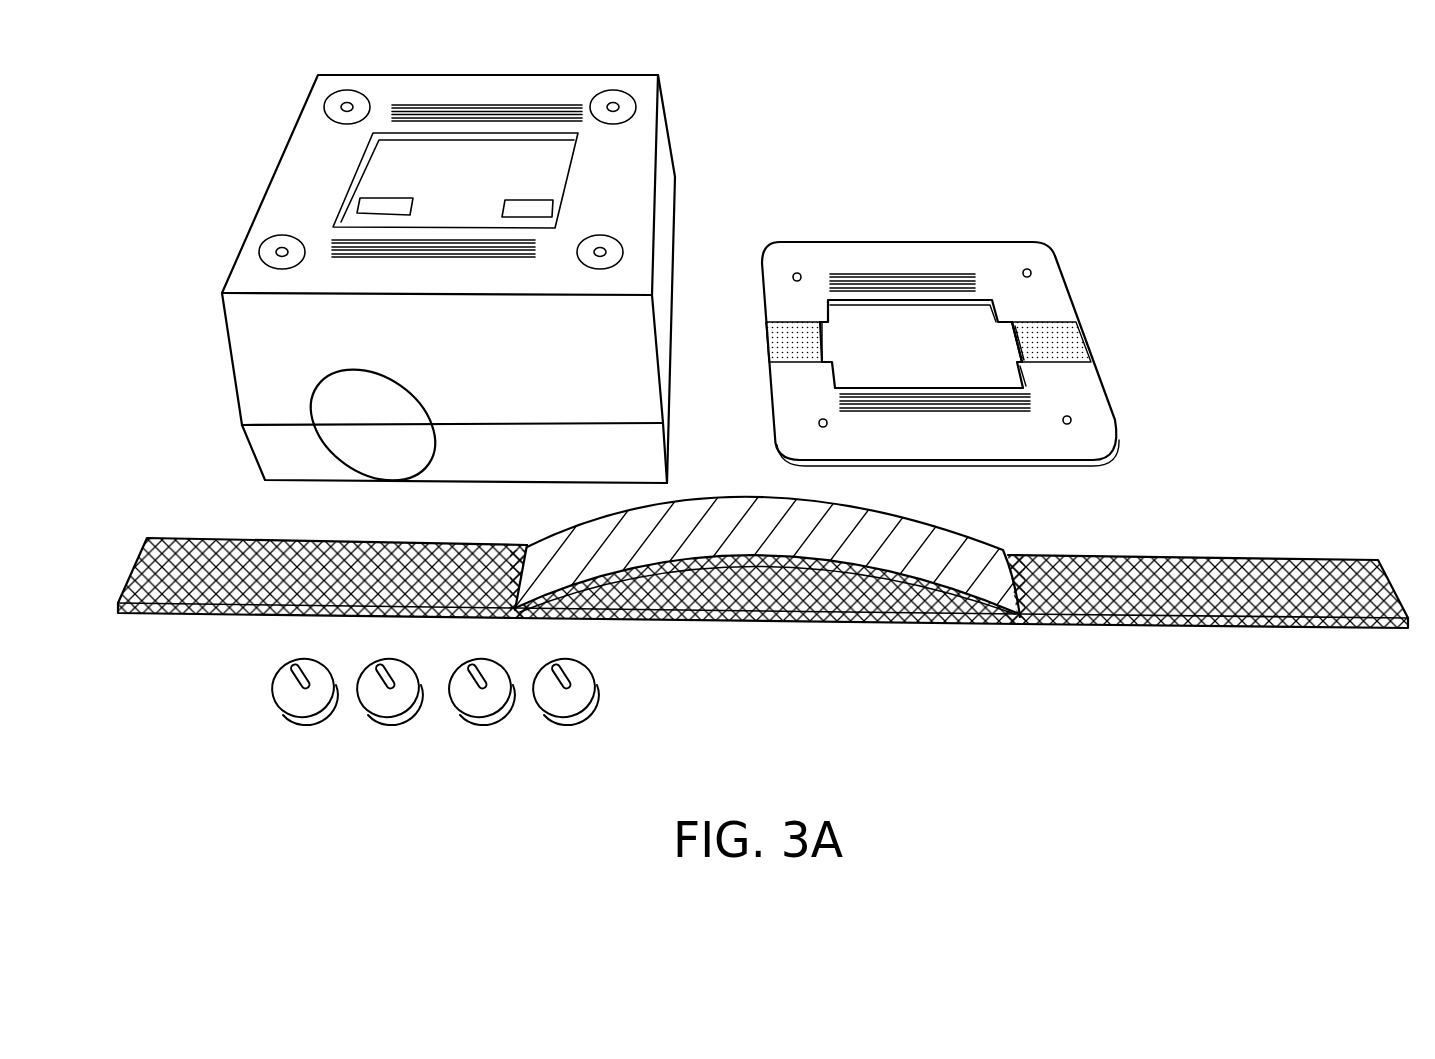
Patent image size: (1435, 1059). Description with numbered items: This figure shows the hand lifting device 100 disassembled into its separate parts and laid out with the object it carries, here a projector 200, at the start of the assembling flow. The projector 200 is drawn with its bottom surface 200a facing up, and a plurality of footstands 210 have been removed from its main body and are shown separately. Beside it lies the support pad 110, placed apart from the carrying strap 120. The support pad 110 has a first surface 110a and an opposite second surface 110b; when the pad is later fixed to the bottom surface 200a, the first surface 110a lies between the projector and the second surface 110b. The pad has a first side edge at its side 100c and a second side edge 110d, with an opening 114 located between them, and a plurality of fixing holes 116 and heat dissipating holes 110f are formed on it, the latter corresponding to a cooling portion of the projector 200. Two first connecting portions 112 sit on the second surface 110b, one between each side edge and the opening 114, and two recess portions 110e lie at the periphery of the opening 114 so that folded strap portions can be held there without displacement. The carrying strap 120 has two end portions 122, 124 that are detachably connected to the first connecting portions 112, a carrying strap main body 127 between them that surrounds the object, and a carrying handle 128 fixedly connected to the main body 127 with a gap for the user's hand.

The hand lifting device 100 is at (969, 319).
The side of antenna module 100c is at (757, 290).
The support pad 110 is at (944, 319).
The first surface 110a is at (1080, 467).
The second surface 110b is at (967, 260).
The second side edge 110d is at (1067, 290).
The recess portion 110e is at (1010, 340).
The heat dissipating holes 110f is at (850, 275).
The first connecting portion 112 is at (1068, 345).
The opening 114 is at (917, 320).
The fixing holes 116 is at (1027, 273).
The carrying strap 120 is at (765, 555).
The end portion 122 is at (182, 563).
The end portion 124 is at (1333, 577).
The carrying strap main body 127 is at (765, 594).
The carrying handle 128 is at (741, 560).
The projector 200 is at (456, 284).
The bottom surface 200a is at (625, 165).
The footstands 210 is at (297, 718).